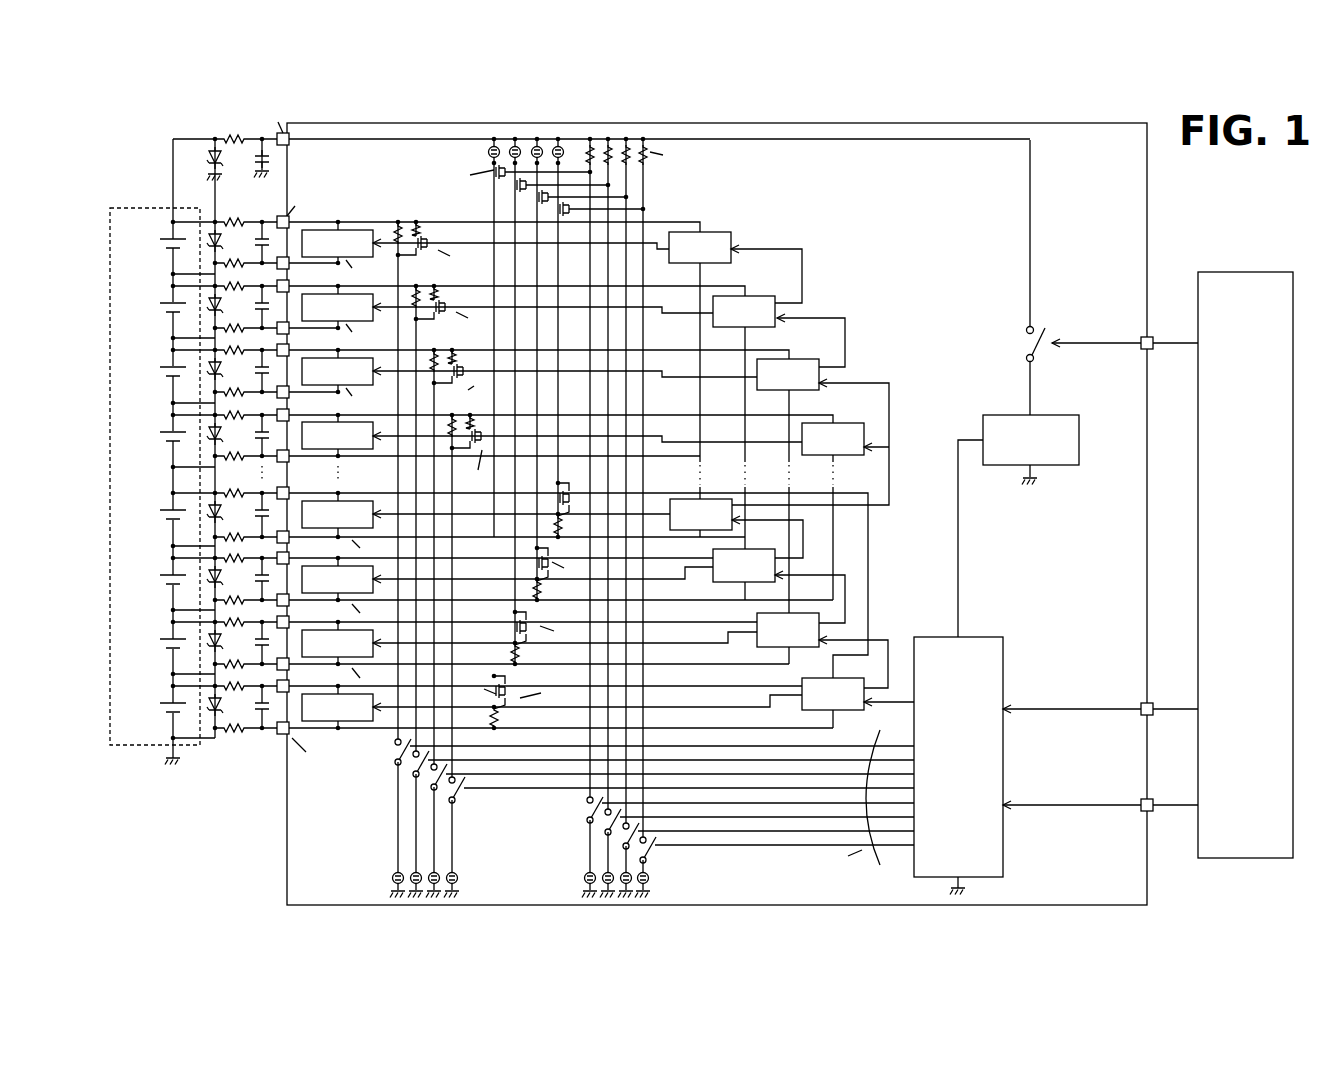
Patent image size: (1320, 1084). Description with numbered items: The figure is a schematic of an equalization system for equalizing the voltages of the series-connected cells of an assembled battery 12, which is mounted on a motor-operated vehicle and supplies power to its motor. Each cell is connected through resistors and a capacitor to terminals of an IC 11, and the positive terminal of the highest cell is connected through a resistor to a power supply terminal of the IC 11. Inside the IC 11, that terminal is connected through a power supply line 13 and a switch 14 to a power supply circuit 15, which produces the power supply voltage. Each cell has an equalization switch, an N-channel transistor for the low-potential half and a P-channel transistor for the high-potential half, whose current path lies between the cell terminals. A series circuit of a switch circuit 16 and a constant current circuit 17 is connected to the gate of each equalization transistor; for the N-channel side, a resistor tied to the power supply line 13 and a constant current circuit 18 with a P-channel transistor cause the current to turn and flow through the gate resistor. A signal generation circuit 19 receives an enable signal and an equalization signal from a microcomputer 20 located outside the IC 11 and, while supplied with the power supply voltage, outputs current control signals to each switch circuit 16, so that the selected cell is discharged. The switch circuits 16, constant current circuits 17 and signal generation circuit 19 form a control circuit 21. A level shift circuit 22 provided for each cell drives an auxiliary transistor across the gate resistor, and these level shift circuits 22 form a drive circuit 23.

The IC 11 is at (764, 123).
The assembled battery 12 is at (140, 206).
The power supply line 13 is at (393, 188).
The switch 14 is at (1023, 342).
The power supply circuit 15 is at (1053, 411).
The switch circuit 16 is at (392, 752).
The constant current circuit 17 is at (391, 879).
The constant current circuit 18 is at (488, 152).
The signal generation circuit 19 is at (975, 635).
The microcomputer 20 is at (1243, 272).
The control circuit 21 is at (376, 808).
The level shift circuit 22 is at (704, 232).
The drive circuit 23 is at (838, 264).